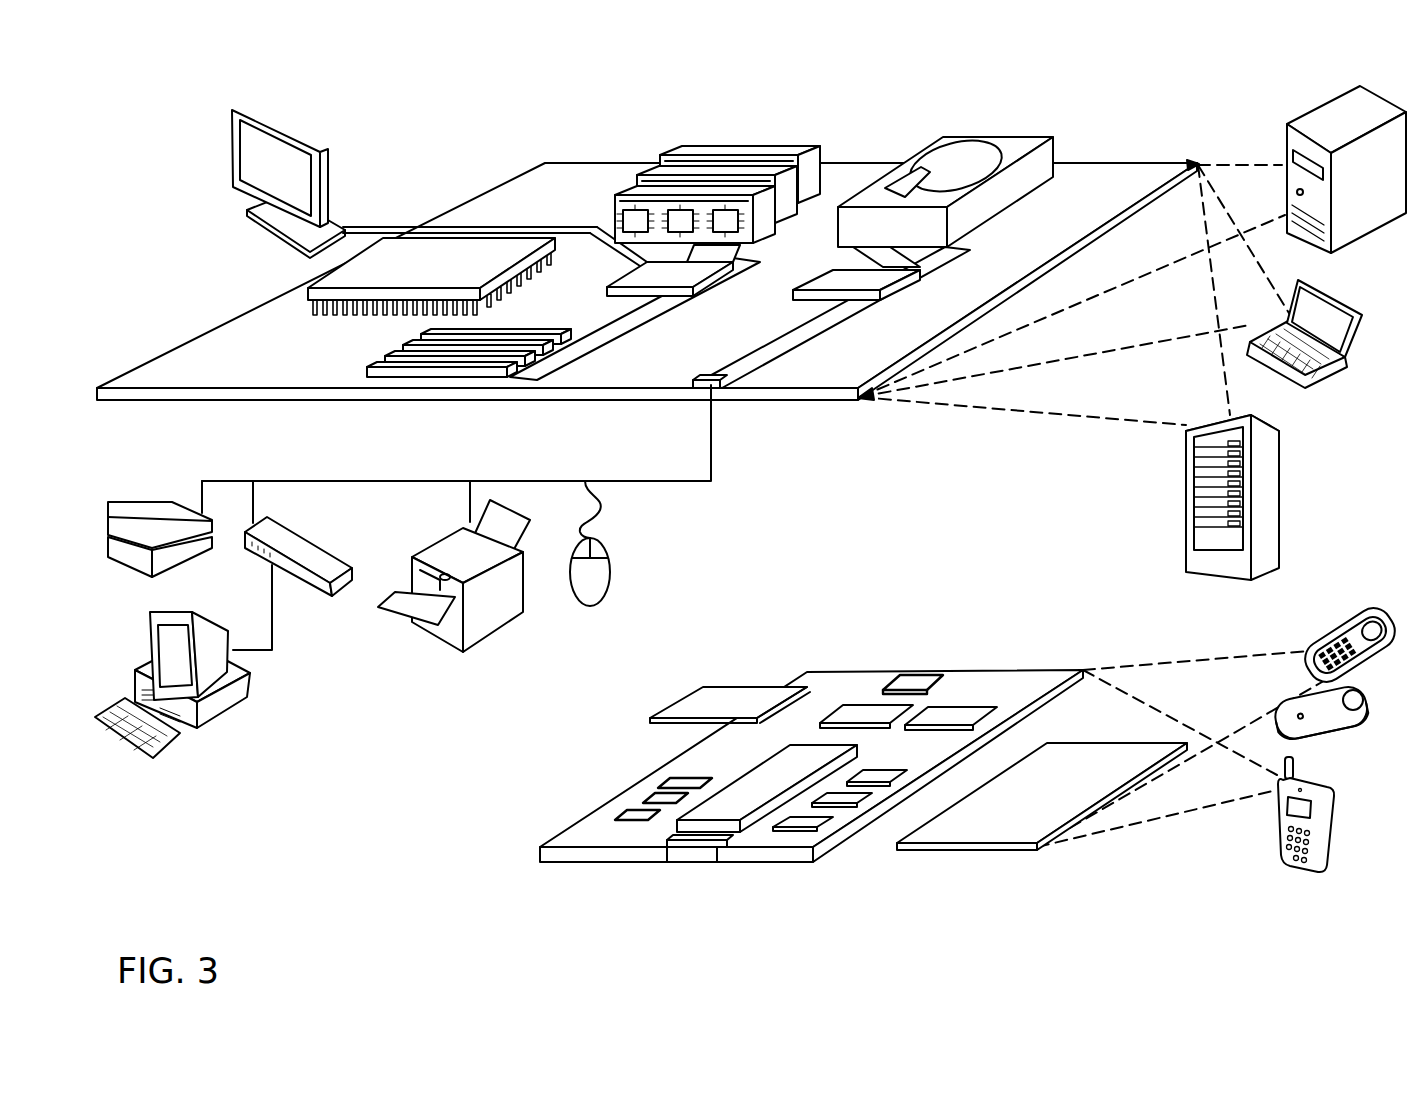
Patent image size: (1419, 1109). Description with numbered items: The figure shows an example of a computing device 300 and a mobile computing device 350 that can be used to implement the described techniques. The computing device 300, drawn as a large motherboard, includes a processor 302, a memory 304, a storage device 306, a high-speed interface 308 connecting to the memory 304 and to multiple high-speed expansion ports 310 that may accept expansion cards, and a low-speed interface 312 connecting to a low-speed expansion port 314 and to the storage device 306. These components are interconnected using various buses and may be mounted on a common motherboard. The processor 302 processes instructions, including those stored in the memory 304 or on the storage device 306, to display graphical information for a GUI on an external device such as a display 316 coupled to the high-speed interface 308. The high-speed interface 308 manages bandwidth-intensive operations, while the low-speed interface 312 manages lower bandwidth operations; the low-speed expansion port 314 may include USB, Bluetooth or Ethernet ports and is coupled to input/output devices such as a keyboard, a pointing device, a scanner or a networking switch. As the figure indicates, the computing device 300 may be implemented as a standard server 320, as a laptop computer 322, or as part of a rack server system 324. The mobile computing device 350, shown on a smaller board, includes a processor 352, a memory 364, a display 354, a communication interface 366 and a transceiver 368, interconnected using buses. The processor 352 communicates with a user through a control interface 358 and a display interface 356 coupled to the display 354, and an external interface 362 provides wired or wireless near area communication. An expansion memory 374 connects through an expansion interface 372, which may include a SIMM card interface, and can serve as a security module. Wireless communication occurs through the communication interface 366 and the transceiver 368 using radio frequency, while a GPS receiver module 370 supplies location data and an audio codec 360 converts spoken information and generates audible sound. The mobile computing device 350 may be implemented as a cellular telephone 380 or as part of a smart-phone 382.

The computing device 300 is at (448, 130).
The processor 302 is at (318, 297).
The memory 304 is at (680, 160).
The storage device 306 is at (926, 150).
The high-speed interface 308 is at (645, 273).
The high-speed expansion ports 310 is at (383, 355).
The low-speed interface 312 is at (834, 278).
The low-speed expansion port 314 is at (720, 387).
The display 316 is at (240, 110).
The standard server 320 is at (1287, 145).
The laptop computer 322 is at (1360, 312).
The rack server system 324 is at (1186, 530).
The mobile computing device 350 is at (505, 862).
The processor 352 is at (735, 817).
The display 354 is at (1000, 835).
The display interface 356 is at (812, 822).
The control interface 358 is at (846, 800).
The audio codec 360 is at (878, 776).
The external interface 362 is at (698, 850).
The memory 364 is at (637, 803).
The communication interface 366 is at (870, 713).
The transceiver 368 is at (953, 710).
The GPS receiver module 370 is at (918, 674).
The expansion interface 372 is at (790, 685).
The expansion memory 374 is at (708, 688).
The cellular telephone 380 is at (1341, 622).
The smart-phone 382 is at (1278, 823).